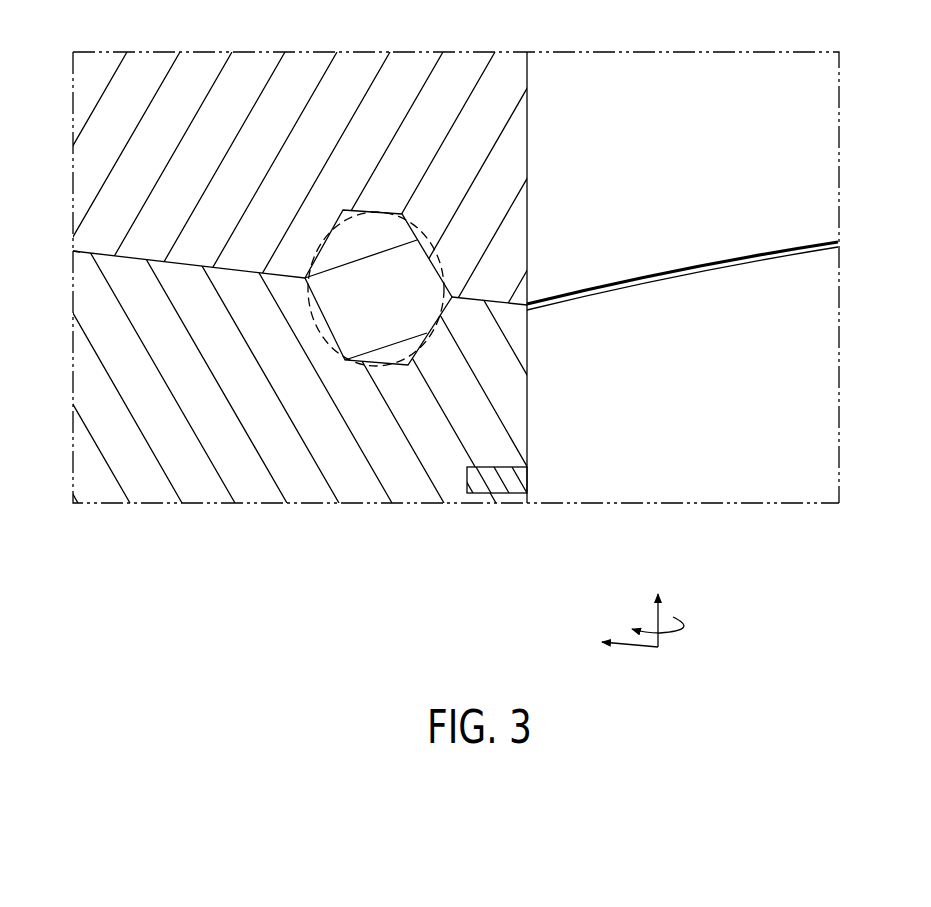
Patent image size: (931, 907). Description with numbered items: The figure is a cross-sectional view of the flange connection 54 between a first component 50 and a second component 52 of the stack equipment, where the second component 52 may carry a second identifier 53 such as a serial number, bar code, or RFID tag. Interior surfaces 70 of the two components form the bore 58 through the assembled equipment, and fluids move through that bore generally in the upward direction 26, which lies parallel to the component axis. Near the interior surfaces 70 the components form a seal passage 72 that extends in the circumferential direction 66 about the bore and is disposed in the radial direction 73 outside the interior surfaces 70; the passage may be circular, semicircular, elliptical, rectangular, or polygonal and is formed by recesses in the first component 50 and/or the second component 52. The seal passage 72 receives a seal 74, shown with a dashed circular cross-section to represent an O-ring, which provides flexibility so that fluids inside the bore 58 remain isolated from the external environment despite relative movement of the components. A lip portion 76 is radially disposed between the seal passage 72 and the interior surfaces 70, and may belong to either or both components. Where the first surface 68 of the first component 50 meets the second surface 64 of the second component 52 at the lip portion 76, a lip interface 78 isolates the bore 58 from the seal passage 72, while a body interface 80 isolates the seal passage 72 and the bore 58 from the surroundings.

The upward direction 26 is at (660, 616).
The first component 50 is at (133, 122).
The second component 52 is at (153, 490).
The second identifier 53 is at (467, 480).
The flange connection 54 is at (68, 249).
The bore 58 is at (740, 485).
The second surface 64 is at (764, 263).
The circumferential direction 66 is at (676, 630).
The first surface 68 is at (759, 250).
The interior surfaces 70 is at (524, 78).
The seal passage 72 is at (409, 370).
The radial direction 73 is at (640, 648).
The seal 74 is at (322, 246).
The lip portion 76 is at (509, 242).
The lip interface 78 is at (476, 306).
The body interface 80 is at (186, 272).